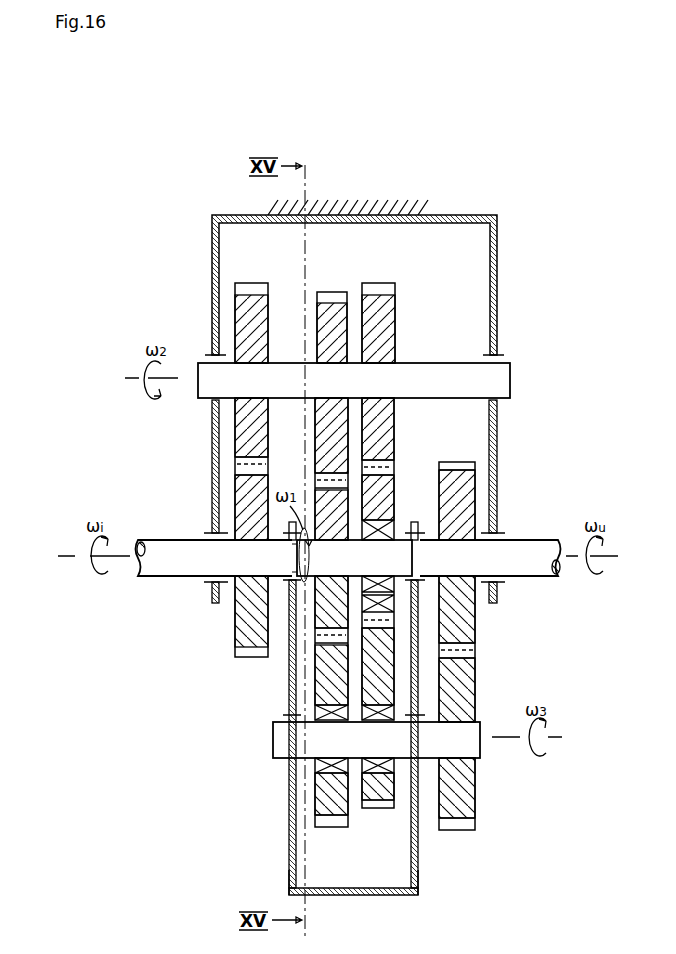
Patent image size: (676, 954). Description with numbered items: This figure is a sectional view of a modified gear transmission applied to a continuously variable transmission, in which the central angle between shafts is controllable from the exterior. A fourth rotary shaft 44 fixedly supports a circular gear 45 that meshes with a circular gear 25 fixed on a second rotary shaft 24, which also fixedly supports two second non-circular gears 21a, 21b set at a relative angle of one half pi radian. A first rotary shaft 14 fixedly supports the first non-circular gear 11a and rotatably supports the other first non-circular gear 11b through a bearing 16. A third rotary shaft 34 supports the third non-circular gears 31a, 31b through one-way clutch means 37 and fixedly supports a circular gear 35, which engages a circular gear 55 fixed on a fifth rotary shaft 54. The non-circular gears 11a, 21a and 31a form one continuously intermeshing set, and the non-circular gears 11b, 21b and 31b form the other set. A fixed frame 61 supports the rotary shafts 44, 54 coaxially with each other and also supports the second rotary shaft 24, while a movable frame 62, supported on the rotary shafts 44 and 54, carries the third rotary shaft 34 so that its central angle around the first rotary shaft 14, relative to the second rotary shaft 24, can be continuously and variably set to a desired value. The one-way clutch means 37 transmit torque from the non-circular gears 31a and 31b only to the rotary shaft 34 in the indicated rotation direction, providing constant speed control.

The first non-circular gear 11a is at (317, 493).
The first non-circular gear 11b is at (397, 475).
The first rotary shaft 14 is at (303, 585).
The bearing 16 is at (318, 655).
The second non-circular gear 21a is at (341, 292).
The second non-circular gear 21b is at (378, 300).
The second rotary shaft 24 is at (248, 375).
The circular gear 25 is at (245, 283).
The third non-circular gear 31a is at (325, 805).
The third non-circular gear 31b is at (380, 806).
The third rotary shaft 34 is at (465, 745).
The circular gear 35 is at (465, 812).
The one-way clutch means 37 is at (298, 770).
The fourth rotary shaft 44 is at (165, 566).
The circular gear 45 is at (240, 607).
The fifth rotary shaft 54 is at (522, 548).
The circular gear 55 is at (467, 485).
The fixed frame 61 is at (468, 215).
The movable frame 62 is at (419, 880).